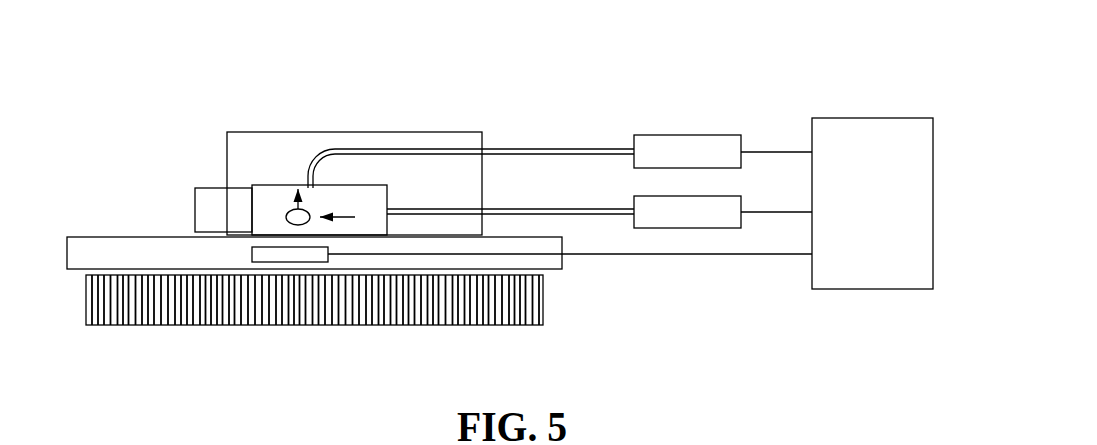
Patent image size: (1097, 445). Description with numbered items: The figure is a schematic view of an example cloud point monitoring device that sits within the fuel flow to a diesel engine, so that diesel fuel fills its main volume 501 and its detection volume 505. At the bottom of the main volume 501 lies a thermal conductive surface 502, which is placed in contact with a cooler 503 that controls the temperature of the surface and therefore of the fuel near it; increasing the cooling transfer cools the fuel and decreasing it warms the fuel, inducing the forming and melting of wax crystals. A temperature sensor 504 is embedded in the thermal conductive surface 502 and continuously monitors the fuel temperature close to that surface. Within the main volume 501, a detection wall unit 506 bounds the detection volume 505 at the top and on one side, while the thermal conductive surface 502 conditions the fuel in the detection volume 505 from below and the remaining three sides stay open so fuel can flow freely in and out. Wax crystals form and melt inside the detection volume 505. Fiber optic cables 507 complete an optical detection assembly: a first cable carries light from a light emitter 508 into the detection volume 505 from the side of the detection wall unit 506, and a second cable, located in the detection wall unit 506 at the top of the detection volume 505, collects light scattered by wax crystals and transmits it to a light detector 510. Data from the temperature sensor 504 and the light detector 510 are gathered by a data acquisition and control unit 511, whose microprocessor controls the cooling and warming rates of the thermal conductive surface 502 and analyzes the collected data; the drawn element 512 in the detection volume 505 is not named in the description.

The main volume 501 is at (186, 201).
The thermal conductive surface 502 is at (152, 251).
The cooler 503 is at (207, 307).
The temperature sensor 504 is at (287, 264).
The detection volume 505 is at (267, 213).
The detection wall unit 506 is at (454, 195).
The fiber optic cable 507 is at (551, 138).
The light emitter 508 is at (701, 220).
The light detector 510 is at (696, 146).
The data acquisition and control unit 511 is at (896, 221).
The sample droplet 512 is at (290, 209).